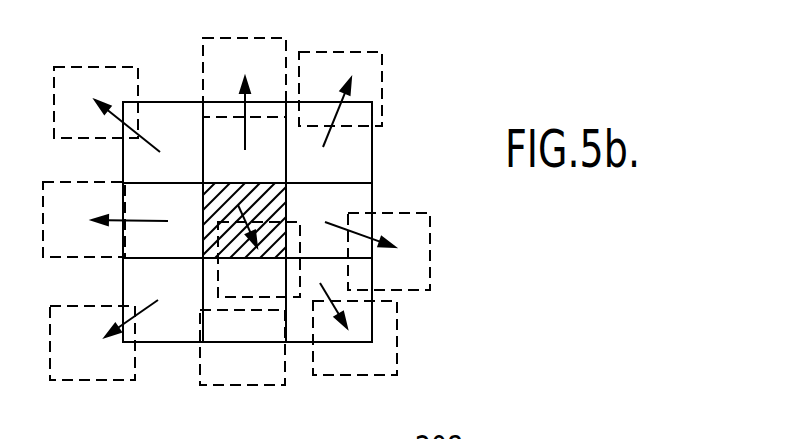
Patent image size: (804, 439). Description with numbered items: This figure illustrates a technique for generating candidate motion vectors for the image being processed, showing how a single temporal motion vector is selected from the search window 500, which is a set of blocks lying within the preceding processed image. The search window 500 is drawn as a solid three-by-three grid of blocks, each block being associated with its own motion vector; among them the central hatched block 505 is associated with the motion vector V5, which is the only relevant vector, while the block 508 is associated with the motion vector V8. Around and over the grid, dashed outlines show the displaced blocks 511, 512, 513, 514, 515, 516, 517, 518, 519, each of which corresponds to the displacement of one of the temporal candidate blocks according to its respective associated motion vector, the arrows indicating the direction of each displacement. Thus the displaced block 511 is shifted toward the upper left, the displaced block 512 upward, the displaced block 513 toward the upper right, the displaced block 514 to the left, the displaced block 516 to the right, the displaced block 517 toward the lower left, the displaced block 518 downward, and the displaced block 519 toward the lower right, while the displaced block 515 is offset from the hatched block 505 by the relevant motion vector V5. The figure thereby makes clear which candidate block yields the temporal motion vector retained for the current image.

The search window 500 is at (372, 160).
The block 505 is at (262, 207).
The block 508 is at (486, 14).
The displaced block 511 is at (98, 78).
The displaced block 512 is at (220, 68).
The displaced block 513 is at (373, 92).
The displaced block 514 is at (65, 205).
The displaced block 515 is at (230, 280).
The displaced block 516 is at (410, 267).
The displaced block 517 is at (78, 367).
The displaced block 518 is at (227, 375).
The displaced block 519 is at (375, 345).